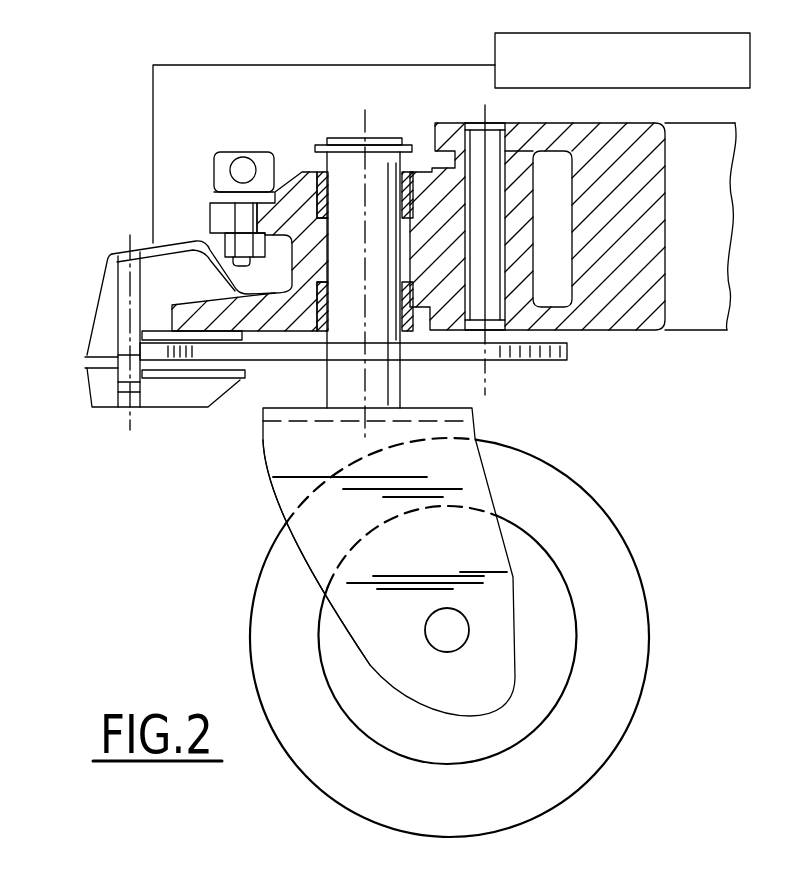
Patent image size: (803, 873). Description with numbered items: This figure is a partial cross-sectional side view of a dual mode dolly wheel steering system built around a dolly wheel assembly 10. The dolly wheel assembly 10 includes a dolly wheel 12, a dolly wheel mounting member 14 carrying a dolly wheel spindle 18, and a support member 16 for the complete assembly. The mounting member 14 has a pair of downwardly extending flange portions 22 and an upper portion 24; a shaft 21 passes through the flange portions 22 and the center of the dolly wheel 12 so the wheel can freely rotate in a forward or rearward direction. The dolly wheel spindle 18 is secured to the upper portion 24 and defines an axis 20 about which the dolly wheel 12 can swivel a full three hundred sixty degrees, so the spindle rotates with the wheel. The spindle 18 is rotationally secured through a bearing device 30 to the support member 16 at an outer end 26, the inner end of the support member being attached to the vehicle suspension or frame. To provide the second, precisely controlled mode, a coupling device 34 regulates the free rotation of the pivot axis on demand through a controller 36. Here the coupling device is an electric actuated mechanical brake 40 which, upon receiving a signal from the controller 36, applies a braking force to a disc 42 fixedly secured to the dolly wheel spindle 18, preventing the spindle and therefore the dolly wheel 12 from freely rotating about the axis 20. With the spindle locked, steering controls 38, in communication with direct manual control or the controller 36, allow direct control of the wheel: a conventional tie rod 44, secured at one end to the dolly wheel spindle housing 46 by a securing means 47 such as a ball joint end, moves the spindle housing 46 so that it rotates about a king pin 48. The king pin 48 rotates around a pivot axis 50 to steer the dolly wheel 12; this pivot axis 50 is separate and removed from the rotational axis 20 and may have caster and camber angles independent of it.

The dolly wheel assembly 10 is at (645, 364).
The dolly wheel 12 is at (578, 502).
The dolly wheel mounting member 14 is at (284, 452).
The support member 16 is at (713, 156).
The dolly wheel spindle 18 is at (338, 168).
The axis 20 is at (361, 110).
The shaft 21 is at (448, 637).
The flange portions 22 is at (320, 537).
The upper portion 24 is at (463, 406).
The outer end 26 is at (538, 133).
The bearing device 30 is at (416, 165).
The coupling device 34 is at (96, 251).
The controller 36 is at (630, 33).
The steering controls 38 is at (238, 150).
The electric actuated mechanical brake 40 is at (98, 312).
The disc 42 is at (263, 362).
The tie rod 44 is at (238, 168).
The dolly wheel spindle housing 46 is at (452, 260).
The securing means 47 is at (237, 213).
The king pin 48 is at (563, 133).
The pivot axis 50 is at (483, 110).